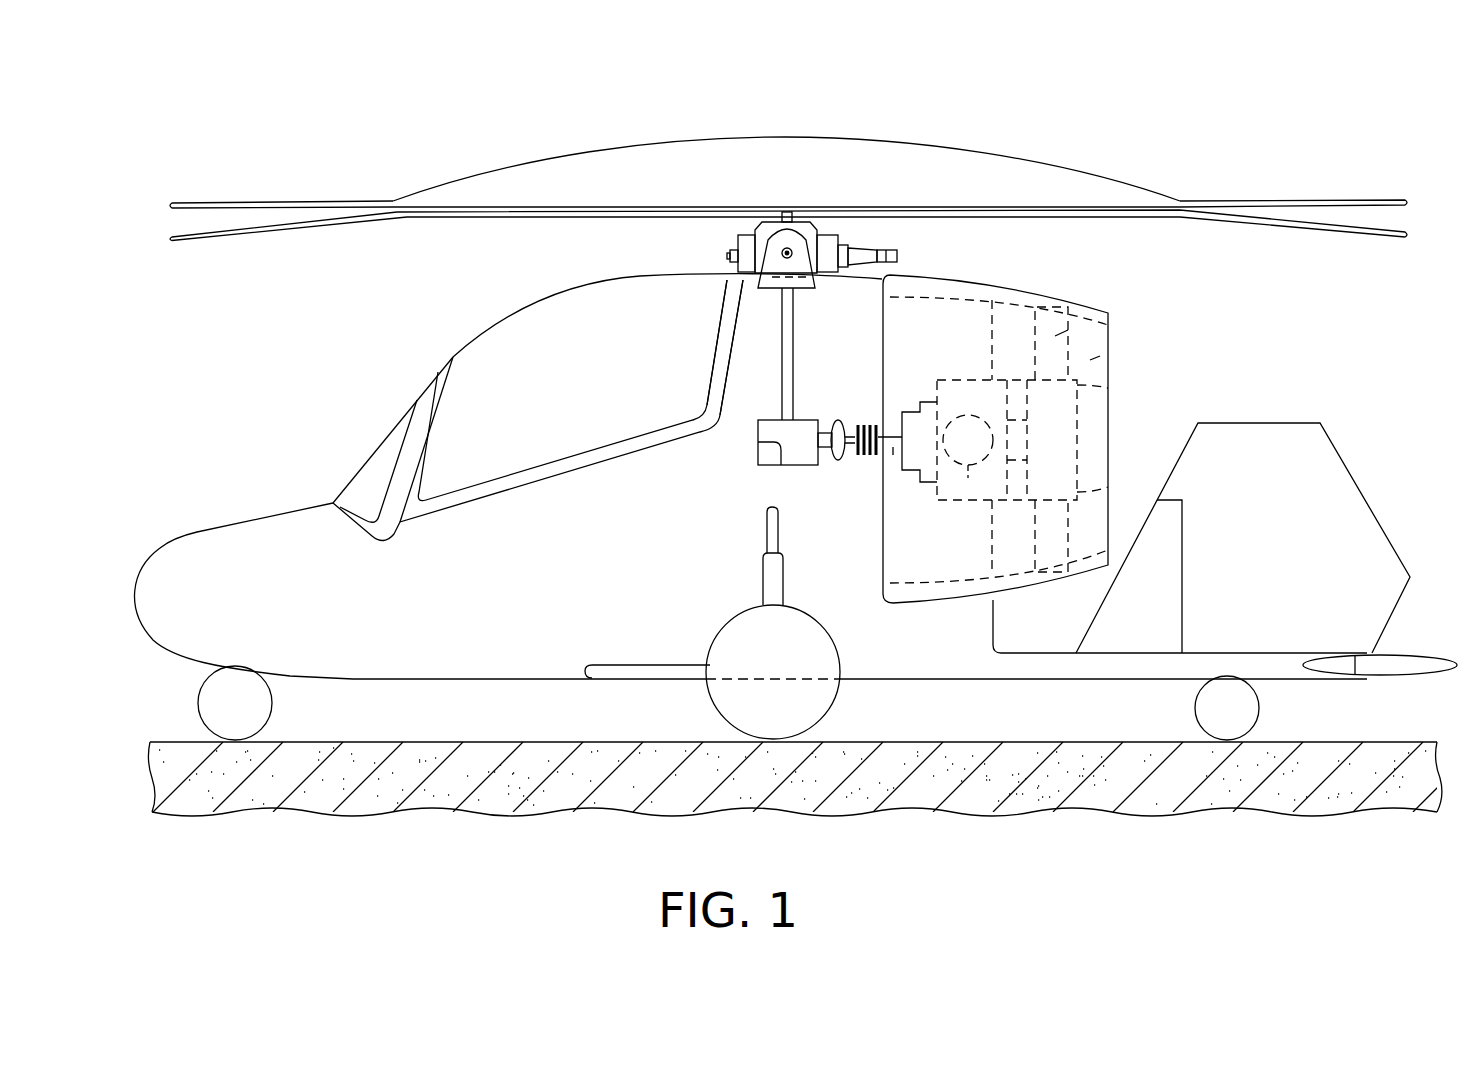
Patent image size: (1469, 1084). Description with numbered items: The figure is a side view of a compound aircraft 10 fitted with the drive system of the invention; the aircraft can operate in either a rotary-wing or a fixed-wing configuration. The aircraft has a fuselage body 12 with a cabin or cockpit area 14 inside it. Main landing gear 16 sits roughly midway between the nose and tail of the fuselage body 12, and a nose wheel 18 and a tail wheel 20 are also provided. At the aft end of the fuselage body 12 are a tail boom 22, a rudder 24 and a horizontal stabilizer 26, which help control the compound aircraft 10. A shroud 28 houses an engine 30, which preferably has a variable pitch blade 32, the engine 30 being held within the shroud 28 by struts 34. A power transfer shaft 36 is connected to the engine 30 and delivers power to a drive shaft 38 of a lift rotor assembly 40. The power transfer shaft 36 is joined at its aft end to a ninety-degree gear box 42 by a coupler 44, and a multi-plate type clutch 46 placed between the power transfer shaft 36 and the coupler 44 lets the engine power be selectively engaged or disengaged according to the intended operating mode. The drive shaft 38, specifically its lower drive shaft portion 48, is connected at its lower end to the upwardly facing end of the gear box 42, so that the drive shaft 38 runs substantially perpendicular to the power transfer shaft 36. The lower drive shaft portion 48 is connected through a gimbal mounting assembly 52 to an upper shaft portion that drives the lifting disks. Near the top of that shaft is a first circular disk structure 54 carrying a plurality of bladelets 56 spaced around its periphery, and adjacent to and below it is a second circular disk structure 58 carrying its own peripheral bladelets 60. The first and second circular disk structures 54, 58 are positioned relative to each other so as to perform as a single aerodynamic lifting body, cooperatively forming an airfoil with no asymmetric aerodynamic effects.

The compound aircraft 10 is at (287, 403).
The fuselage body 12 is at (198, 528).
The cabin or cockpit area 14 is at (515, 365).
The main landing gear 16 is at (842, 690).
The nose wheel 18 is at (272, 704).
The tail wheel 20 is at (1195, 703).
The tail boom 22 is at (1080, 680).
The rudder 24 is at (1333, 440).
The horizontal stabilizer 26 is at (1412, 680).
The shroud 28 is at (1010, 287).
The engine 30 is at (968, 478).
The variable pitch blade 32 is at (1055, 336).
The struts 34 is at (1090, 360).
The power transfer shaft 36 is at (893, 477).
The drive shaft 38 is at (778, 375).
The lift rotor assembly 40 is at (712, 232).
The 90° gear box 42 is at (755, 437).
The coupler 44 is at (838, 463).
The multi-plate type clutch 46 is at (867, 423).
The lower drive shaft portion 48 is at (793, 342).
The gimbal mounting assembly 52 is at (850, 232).
The first circular disk structure 54 is at (1117, 170).
The bladelets 56 is at (236, 200).
The second circular disk structure 58 is at (467, 220).
The bladelets 60 is at (202, 240).